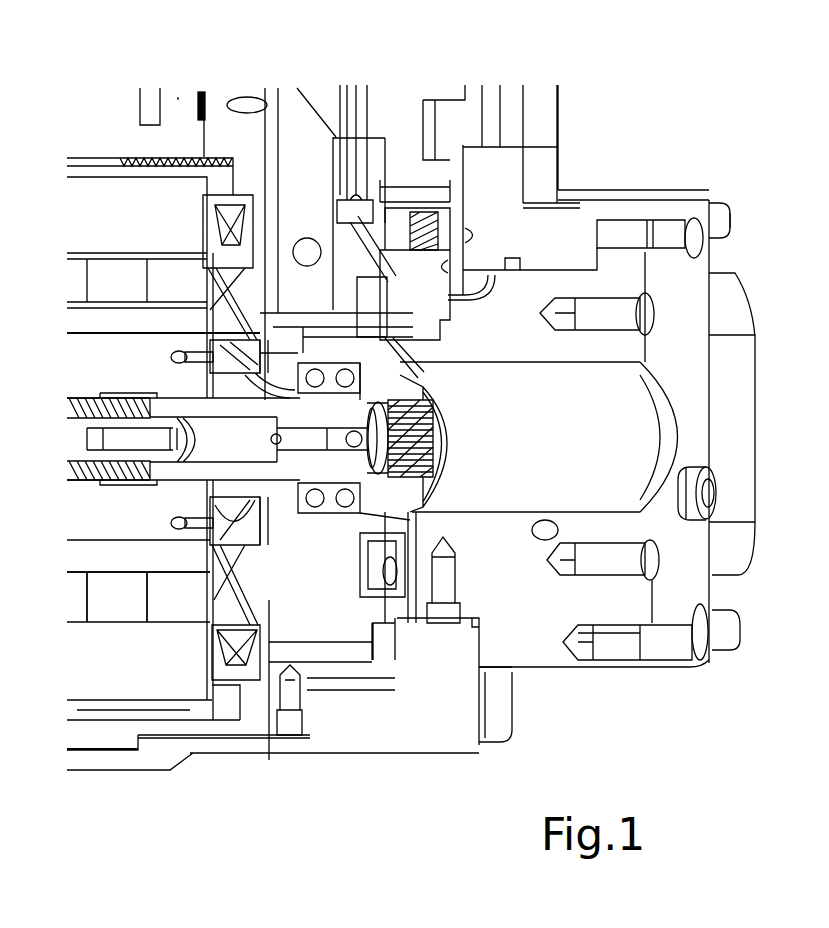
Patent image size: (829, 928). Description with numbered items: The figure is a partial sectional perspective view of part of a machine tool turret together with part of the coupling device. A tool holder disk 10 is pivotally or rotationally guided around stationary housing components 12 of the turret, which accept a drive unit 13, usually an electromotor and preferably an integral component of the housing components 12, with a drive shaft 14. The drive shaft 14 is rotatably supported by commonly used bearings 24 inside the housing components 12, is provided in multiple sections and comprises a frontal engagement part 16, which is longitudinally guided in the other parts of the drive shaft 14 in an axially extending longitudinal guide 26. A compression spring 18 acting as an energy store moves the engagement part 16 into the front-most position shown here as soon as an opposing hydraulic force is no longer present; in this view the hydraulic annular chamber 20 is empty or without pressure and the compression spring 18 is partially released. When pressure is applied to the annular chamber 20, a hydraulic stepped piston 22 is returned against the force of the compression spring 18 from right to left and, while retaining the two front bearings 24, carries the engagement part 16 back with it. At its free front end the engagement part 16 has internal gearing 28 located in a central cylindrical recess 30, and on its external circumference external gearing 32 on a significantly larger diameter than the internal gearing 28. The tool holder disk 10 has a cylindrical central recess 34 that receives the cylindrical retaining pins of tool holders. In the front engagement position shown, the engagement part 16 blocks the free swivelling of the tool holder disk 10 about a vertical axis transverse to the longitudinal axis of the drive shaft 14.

The tool holder disk 10 is at (663, 195).
The stationary housing components 12 is at (178, 97).
The drive unit 13 is at (130, 610).
The drive shaft 14 is at (160, 400).
The frontal engagement part 16 is at (185, 480).
The compression spring 18 is at (92, 482).
The hydraulic annular chamber 20 is at (336, 300).
The hydraulic stepped piston 22 is at (270, 760).
The bearings 24 is at (345, 520).
The longitudinal guide 26 is at (245, 338).
The internal gearing 28 is at (447, 440).
The central cylindrical recess 30 is at (448, 465).
The external gearing 32 is at (448, 402).
The central recess 34 is at (628, 446).